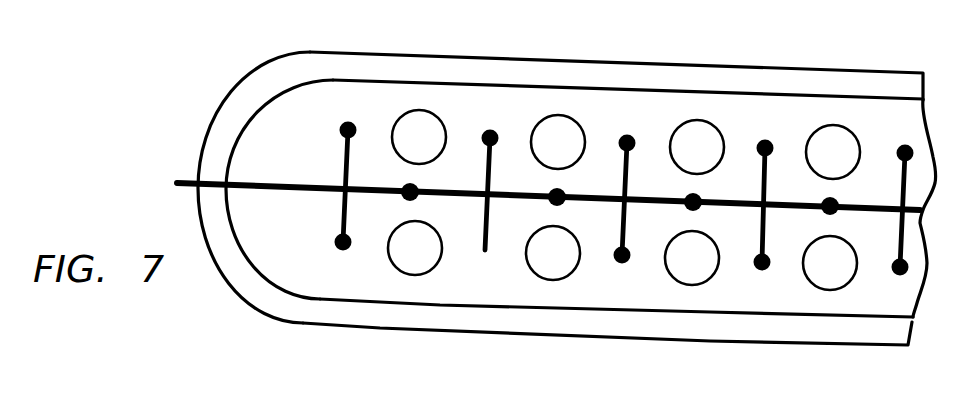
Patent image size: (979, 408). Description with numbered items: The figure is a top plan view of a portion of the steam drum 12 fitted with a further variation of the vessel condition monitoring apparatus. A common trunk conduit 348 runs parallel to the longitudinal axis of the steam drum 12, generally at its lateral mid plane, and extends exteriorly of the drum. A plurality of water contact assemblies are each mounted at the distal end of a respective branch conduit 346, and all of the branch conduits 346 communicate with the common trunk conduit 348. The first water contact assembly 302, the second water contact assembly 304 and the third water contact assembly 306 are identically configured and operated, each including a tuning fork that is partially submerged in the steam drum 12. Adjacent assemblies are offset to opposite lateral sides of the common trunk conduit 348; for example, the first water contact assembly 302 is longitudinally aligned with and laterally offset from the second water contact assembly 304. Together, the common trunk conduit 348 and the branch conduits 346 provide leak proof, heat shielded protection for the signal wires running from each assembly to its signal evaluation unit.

The steam drum 12 is at (493, 333).
The first water contact assembly 302 is at (338, 129).
The second water contact assembly 304 is at (334, 249).
The third water contact assembly 306 is at (499, 129).
The branch conduit 346 is at (484, 218).
The common trunk conduit 348 is at (257, 182).